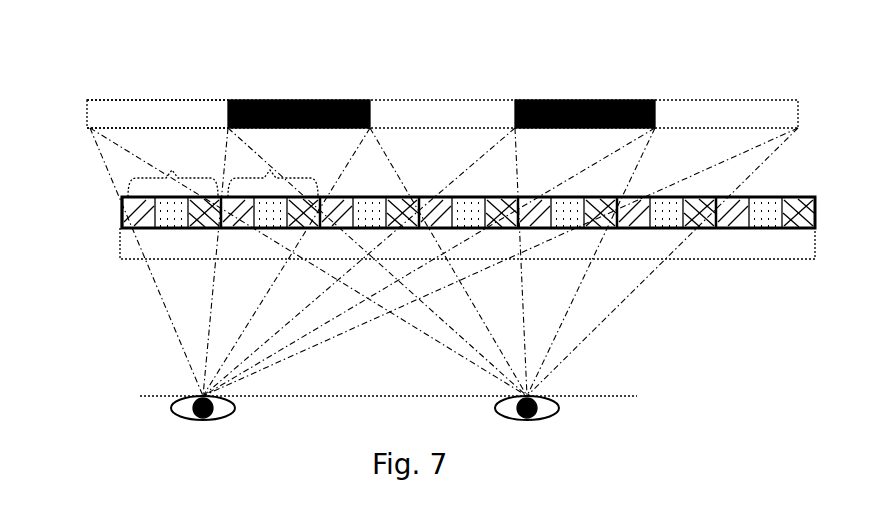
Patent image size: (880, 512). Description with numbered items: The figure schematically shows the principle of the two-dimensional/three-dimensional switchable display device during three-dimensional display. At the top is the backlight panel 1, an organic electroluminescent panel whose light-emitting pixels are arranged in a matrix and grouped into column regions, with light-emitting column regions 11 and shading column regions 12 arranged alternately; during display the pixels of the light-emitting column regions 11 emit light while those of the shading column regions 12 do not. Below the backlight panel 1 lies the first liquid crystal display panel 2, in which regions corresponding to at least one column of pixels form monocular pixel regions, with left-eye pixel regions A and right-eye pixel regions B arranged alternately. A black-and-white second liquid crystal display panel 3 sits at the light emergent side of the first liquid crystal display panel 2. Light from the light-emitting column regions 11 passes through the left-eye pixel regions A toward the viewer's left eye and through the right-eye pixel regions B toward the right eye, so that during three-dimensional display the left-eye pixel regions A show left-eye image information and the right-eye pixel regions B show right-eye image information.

The backlight panel 1 is at (87, 117).
The light-emitting column region 11 is at (148, 100).
The shading column region 12 is at (285, 100).
The first liquid crystal display panel 2 is at (120, 213).
The second liquid crystal display panel 3 is at (120, 243).
The left-eye pixel region A is at (173, 165).
The right-eye pixel region B is at (273, 165).